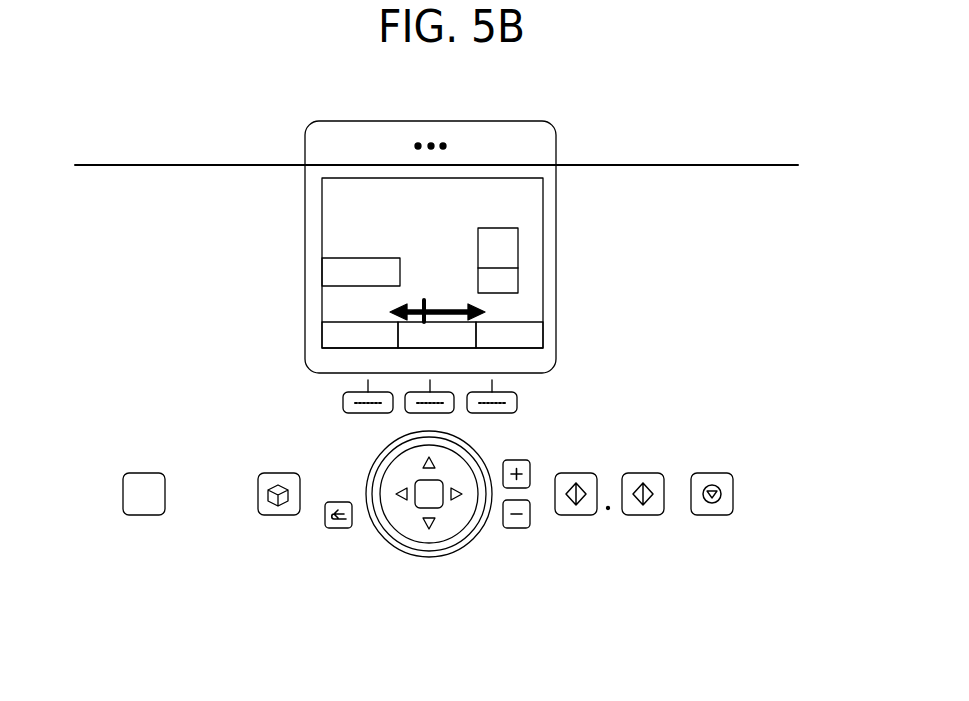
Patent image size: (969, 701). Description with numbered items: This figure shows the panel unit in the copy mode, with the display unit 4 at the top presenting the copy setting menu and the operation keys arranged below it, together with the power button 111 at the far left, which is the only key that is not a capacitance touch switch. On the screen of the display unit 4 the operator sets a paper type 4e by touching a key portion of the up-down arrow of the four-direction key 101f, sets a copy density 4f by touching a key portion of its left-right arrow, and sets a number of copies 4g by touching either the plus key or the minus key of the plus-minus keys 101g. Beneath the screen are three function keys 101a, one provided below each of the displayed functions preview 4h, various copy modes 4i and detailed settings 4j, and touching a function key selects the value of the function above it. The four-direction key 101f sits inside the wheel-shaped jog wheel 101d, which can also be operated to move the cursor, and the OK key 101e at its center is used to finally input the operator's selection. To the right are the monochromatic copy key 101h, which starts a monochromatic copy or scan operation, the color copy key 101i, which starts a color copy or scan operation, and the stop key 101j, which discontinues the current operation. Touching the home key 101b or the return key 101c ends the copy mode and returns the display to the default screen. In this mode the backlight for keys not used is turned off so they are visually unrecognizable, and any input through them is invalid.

The display unit 4 is at (556, 190).
The paper type 4e is at (345, 265).
The copy density 4f is at (424, 299).
The number of copies 4g is at (518, 240).
The preview function 4h is at (331, 335).
The various copy modes function 4i is at (455, 340).
The detailed settings function 4j is at (530, 336).
The function key 101a is at (572, 433).
The home key 101b is at (262, 500).
The return key 101c is at (332, 528).
The jog wheel 101d is at (383, 537).
The OK key 101e is at (442, 507).
The four-direction key 101f is at (418, 535).
The plus-minus keys 101g is at (527, 520).
The monochromatic copy key 101h is at (595, 507).
The color copy key 101i is at (660, 507).
The stop key 101j is at (725, 510).
The power button 111 is at (142, 515).